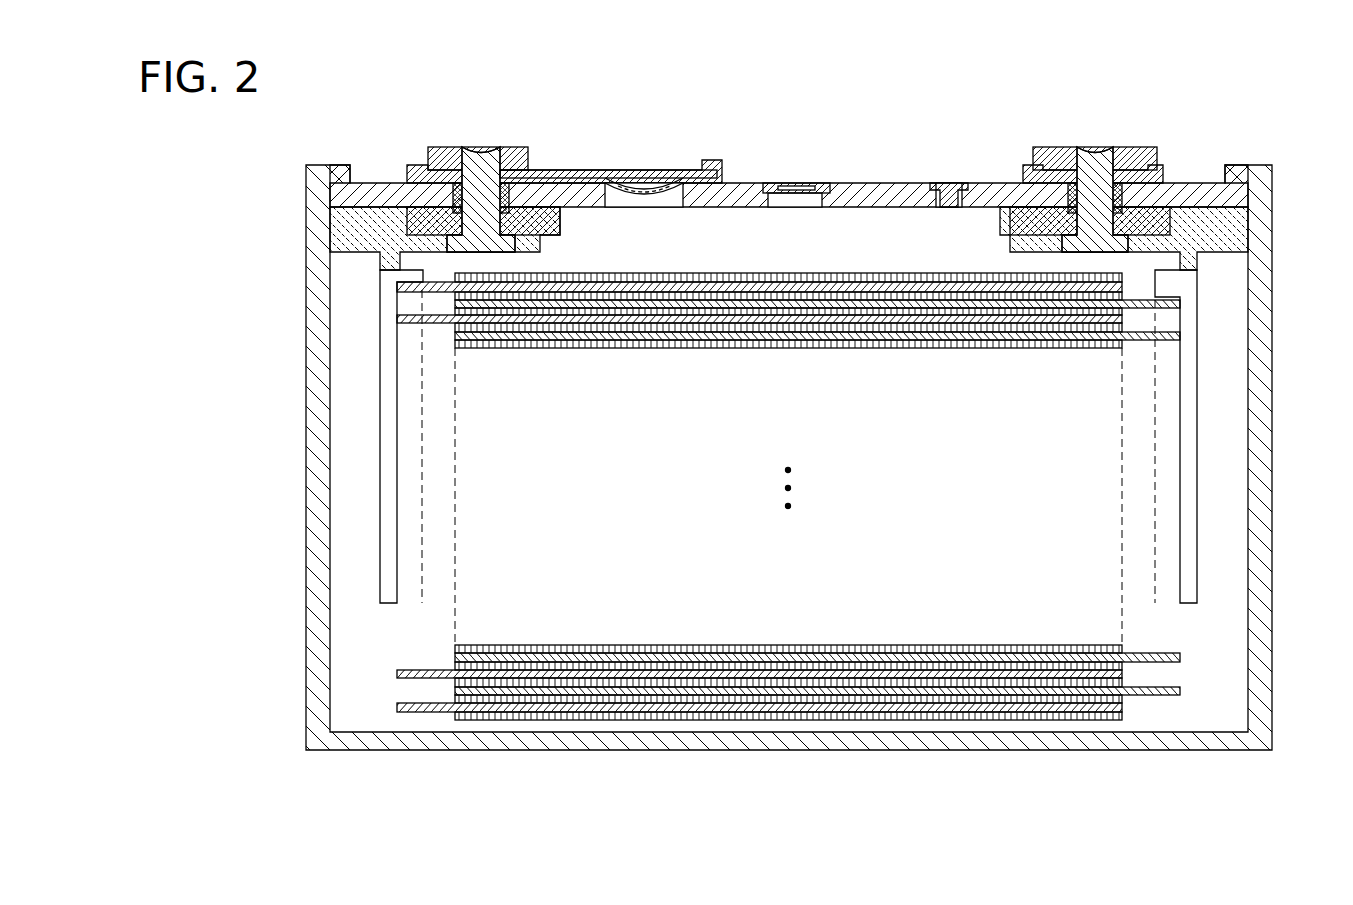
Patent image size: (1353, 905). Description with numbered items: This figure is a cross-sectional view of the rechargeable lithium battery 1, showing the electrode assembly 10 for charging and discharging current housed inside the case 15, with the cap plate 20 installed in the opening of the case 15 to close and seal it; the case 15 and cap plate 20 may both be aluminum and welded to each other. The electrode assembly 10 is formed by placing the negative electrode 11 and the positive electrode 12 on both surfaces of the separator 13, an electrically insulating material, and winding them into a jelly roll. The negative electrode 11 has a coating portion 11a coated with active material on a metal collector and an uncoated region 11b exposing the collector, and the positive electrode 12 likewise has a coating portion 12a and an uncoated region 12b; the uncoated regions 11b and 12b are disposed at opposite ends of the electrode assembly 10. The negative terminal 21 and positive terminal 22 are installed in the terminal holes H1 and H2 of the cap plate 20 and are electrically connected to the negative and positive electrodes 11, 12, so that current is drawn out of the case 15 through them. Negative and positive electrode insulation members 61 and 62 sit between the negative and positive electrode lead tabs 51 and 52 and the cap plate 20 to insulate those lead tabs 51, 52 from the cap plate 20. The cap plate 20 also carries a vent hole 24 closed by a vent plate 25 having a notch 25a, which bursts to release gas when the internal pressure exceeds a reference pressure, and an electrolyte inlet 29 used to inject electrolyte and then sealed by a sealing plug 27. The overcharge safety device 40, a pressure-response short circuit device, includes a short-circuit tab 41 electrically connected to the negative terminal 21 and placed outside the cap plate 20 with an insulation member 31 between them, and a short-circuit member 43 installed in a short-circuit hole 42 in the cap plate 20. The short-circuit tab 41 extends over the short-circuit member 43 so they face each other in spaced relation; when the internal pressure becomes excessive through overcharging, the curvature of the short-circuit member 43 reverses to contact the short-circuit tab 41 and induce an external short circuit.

The rechargeable lithium battery 1 is at (797, 85).
The electrode assembly 10 is at (793, 562).
The negative electrode 11 is at (759, 564).
The coating portion 11a is at (410, 806).
The uncoated region 11b is at (427, 727).
The positive electrode 12 is at (822, 575).
The coating portion 12a is at (1040, 696).
The uncoated region 12b is at (1025, 810).
The separator 13 is at (806, 719).
The case 15 is at (1262, 388).
The cap plate 20 is at (872, 192).
The negative terminal 21 is at (483, 142).
The positive terminal 22 is at (1093, 142).
The vent hole 24 is at (797, 207).
The vent plate 25 is at (790, 156).
The notch 25a is at (782, 183).
The sealing plug 27 is at (956, 183).
The electrolyte inlet 29 is at (945, 181).
The insulation member 31 is at (708, 161).
The overcharge safety device 40 is at (608, 164).
The short-circuit tab 41 is at (597, 169).
The short-circuit hole 42 is at (678, 194).
The short-circuit member 43 is at (632, 196).
The negative electrode lead tab 51 is at (380, 402).
The positive electrode lead tab 52 is at (1200, 565).
The negative electrode insulation member 61 is at (348, 224).
The positive electrode insulation member 62 is at (1232, 230).
The terminal hole H1 is at (455, 172).
The terminal hole H2 is at (1100, 180).